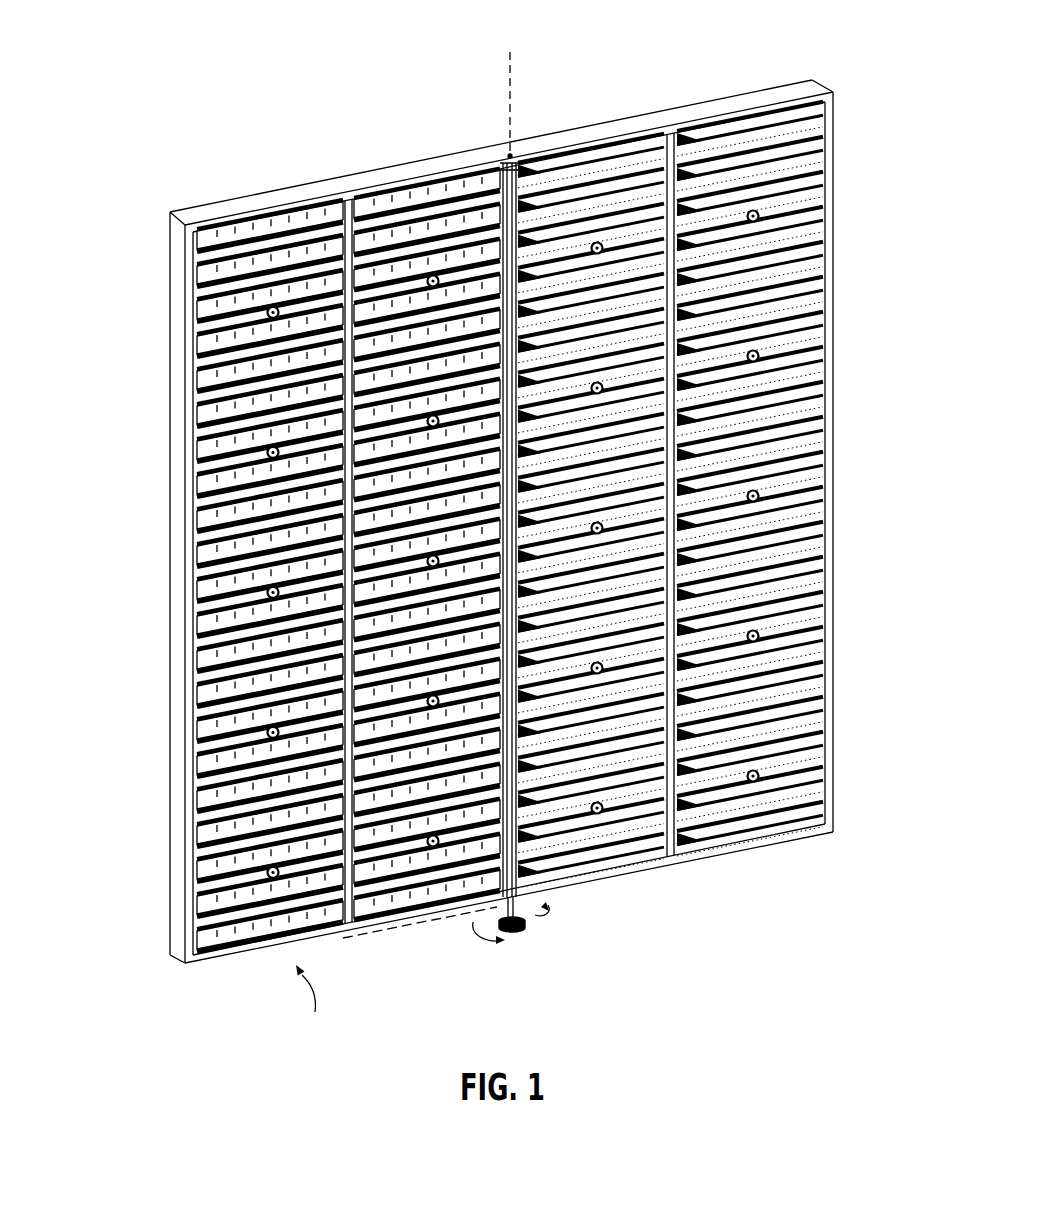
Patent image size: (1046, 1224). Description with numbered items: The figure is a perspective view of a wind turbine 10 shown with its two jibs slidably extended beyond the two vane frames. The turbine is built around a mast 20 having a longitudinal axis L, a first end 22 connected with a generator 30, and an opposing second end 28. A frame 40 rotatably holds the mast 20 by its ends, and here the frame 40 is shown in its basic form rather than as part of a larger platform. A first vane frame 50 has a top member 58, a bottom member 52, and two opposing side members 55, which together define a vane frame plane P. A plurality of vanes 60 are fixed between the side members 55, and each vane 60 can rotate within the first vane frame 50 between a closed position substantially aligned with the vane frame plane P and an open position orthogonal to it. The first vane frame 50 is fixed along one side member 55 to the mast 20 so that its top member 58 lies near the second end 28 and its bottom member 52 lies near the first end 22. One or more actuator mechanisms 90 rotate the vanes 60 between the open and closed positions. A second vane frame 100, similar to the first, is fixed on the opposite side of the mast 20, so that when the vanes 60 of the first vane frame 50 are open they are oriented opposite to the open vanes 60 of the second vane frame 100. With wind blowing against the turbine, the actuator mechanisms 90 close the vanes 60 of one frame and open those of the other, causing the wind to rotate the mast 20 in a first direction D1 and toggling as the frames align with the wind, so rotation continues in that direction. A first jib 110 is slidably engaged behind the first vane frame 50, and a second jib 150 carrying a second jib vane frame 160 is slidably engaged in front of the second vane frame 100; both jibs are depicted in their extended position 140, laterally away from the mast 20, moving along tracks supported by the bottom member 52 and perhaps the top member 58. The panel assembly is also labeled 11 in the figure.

The second vane frame 100 is at (622, 40).
The wind turbine 10 is at (150, 258).
The louver panel 11 is at (538, 533).
The second jib 150 is at (872, 86).
The frame 40 is at (832, 296).
The first jib 110 is at (197, 243).
The second jib vane frame 160 is at (832, 177).
The top member 58 is at (461, 176).
The bottom member 52 is at (362, 917).
The extended position 140 is at (822, 852).
The first vane frame 50 is at (402, 152).
The vanes 60 is at (388, 233).
The side members 55 is at (604, 528).
The actuator mechanisms 90 is at (758, 493).
The mast 20 is at (527, 433).
The second end 28 is at (517, 172).
The generator 30 is at (520, 931).
The first end 22 is at (530, 915).
The longitudinal axis L is at (512, 70).
The vane frame plane P is at (428, 928).
The first direction D1 is at (315, 1006).